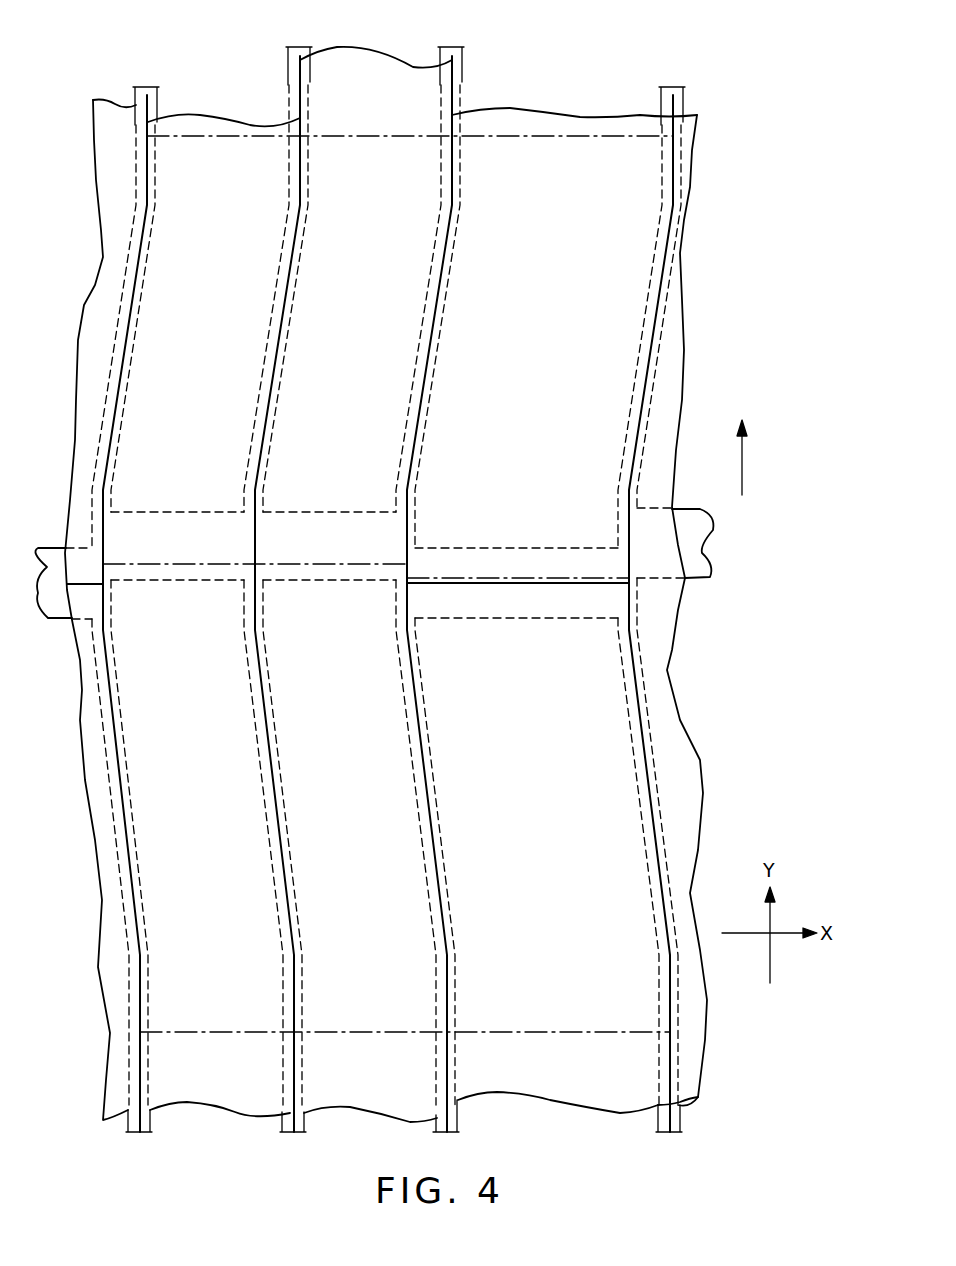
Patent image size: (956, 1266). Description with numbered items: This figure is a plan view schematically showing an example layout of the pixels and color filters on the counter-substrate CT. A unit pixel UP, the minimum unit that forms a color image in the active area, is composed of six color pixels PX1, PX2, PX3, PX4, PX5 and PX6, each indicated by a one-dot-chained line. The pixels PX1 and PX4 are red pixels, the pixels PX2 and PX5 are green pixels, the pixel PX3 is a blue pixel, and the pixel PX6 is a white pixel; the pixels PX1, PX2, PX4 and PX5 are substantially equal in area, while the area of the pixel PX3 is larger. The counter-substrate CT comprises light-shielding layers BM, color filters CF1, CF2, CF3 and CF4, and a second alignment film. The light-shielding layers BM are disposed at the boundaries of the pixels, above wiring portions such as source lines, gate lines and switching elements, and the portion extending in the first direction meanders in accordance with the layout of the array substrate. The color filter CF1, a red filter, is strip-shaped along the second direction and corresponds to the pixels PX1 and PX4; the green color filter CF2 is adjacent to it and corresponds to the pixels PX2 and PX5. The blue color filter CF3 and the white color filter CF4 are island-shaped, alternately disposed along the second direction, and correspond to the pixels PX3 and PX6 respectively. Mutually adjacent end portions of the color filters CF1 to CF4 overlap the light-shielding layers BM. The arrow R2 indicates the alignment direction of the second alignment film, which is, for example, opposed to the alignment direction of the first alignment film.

The light-shielding layer BM is at (148, 83).
The color filter CF1 is at (213, 128).
The color filter CF2 is at (380, 72).
The color filter CF3 is at (650, 343).
The color filter CF4 is at (640, 722).
The unit pixel UP is at (652, 130).
The counter-substrate CT is at (743, 224).
The alignment direction R2 is at (743, 458).
The pixel PX1 is at (177, 436).
The pixel PX2 is at (329, 436).
The pixel PX3 is at (516, 454).
The pixel PX4 is at (177, 702).
The pixel PX5 is at (329, 702).
The pixel PX6 is at (516, 721).